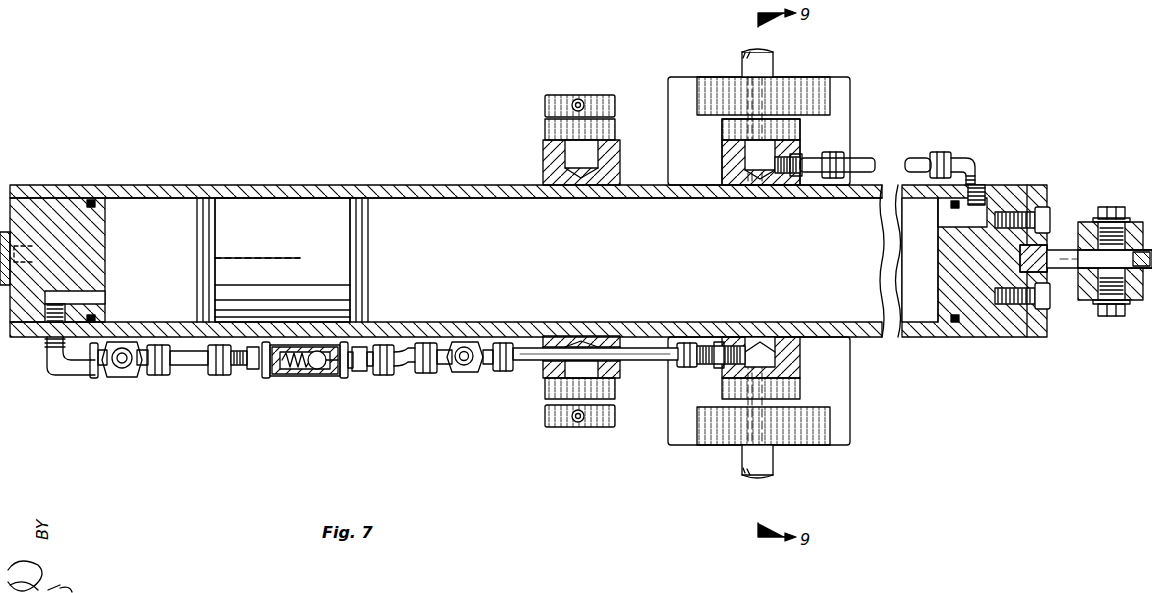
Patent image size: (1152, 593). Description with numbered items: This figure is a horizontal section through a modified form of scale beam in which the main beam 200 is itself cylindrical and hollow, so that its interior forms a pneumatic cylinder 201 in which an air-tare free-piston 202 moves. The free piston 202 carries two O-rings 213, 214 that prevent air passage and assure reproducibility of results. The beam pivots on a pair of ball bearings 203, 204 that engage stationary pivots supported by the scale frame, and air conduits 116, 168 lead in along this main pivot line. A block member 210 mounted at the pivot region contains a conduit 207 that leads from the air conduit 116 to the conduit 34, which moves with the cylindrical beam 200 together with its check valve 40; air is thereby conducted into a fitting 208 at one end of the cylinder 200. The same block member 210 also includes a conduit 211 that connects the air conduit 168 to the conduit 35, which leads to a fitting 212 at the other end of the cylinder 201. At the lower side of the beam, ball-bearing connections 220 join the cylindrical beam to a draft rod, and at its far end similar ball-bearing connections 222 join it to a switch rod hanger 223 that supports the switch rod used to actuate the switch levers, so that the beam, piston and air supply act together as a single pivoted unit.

The main beam 200 is at (394, 183).
The pneumatic cylinder 201 is at (420, 198).
The air-tare free-piston 202 is at (295, 231).
The O-ring 213 is at (208, 222).
The O-ring 214 is at (356, 247).
The fitting 208 is at (104, 297).
The ball-bearing connections 220 is at (556, 130).
The air conduit 168 is at (744, 56).
The ball bearing 204 is at (737, 132).
The block member 210 is at (722, 169).
The conduit 211 is at (767, 178).
The conduit 35 is at (905, 162).
The air conduit 116 is at (742, 462).
The ball bearing 203 is at (737, 389).
The conduit 207 is at (765, 355).
The conduit 34 is at (616, 360).
The check valve 40 is at (316, 378).
The fitting 212 is at (946, 225).
The ball-bearing connections 222 is at (1090, 222).
The switch rod hanger 223 is at (1098, 304).